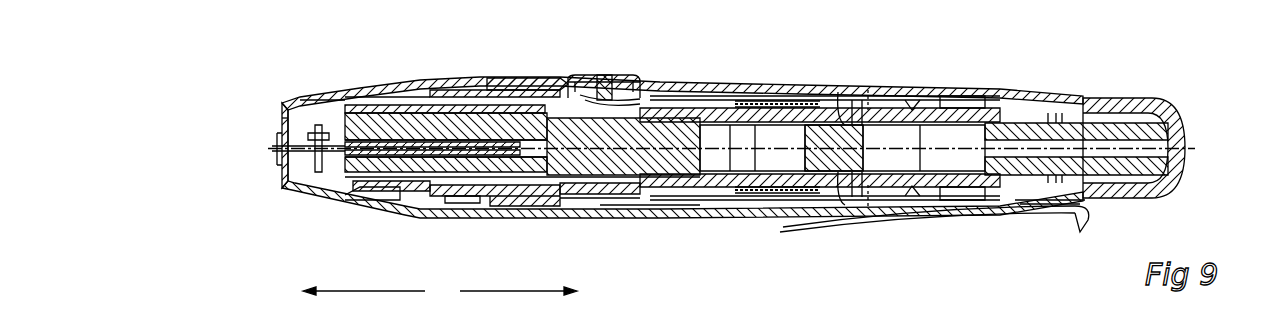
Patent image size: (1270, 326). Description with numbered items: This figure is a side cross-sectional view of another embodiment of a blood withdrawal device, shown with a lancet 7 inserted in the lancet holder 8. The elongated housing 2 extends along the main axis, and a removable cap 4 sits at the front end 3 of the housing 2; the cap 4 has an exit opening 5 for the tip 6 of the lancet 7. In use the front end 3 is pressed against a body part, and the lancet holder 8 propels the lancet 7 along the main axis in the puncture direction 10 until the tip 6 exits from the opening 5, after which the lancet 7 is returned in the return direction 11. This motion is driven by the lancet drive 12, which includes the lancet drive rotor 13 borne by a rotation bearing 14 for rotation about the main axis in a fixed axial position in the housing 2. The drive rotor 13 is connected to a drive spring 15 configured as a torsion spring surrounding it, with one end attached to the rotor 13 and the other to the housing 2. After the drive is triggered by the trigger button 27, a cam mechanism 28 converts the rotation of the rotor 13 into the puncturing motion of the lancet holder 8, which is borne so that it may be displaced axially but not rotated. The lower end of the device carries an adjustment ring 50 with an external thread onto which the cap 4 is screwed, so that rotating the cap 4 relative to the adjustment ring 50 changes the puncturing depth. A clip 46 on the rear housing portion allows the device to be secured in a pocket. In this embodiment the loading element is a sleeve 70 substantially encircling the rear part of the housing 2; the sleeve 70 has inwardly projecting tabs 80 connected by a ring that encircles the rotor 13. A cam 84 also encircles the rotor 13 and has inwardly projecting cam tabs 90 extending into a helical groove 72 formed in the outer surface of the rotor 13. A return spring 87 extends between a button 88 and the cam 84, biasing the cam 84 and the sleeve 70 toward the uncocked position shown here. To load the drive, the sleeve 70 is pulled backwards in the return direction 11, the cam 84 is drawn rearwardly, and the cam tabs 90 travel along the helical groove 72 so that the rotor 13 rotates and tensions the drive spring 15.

The housing 2 is at (525, 79).
The front end 3 is at (282, 118).
The cap 4 is at (353, 203).
The exit opening 5 is at (274, 152).
The tip 6 is at (307, 158).
The lancet 7 is at (433, 160).
The lancet holder 8 is at (513, 167).
The puncture direction 10 is at (355, 292).
The return direction 11 is at (513, 292).
The lancet drive 12 is at (763, 157).
The lancet drive rotor 13 is at (874, 100).
The rotation bearing 14 is at (748, 218).
The drive spring 15 is at (763, 98).
The trigger button 27 is at (595, 74).
The cam mechanism 28 is at (712, 92).
The clip 46 is at (1052, 228).
The adjustment ring 50 is at (457, 210).
The sleeve 70 is at (843, 90).
The helical groove 72 is at (962, 108).
The tabs 80 is at (856, 108).
The cam 84 is at (917, 100).
The return spring 87 is at (1032, 110).
The button 88 is at (1133, 100).
The cam tabs 90 is at (864, 104).